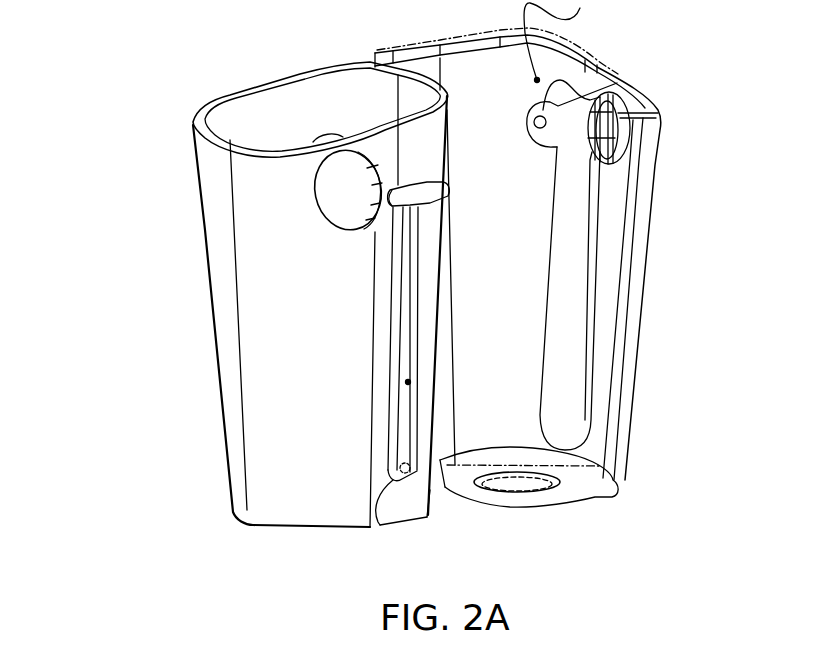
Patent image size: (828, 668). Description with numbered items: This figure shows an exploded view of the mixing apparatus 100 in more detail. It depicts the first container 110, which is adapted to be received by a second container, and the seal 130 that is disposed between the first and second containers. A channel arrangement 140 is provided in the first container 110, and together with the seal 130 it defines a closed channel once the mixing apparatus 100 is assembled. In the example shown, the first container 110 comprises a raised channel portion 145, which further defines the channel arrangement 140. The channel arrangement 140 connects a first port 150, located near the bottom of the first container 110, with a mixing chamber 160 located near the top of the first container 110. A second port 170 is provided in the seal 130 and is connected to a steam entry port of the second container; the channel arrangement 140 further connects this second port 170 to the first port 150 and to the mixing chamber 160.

The mixing apparatus 100 is at (133, 62).
The first container 110 is at (235, 117).
The seal 130 is at (563, 270).
The channel arrangement 140 is at (478, 470).
The raised channel portion 145 is at (397, 347).
The first port 150 is at (380, 525).
The mixing chamber 160 is at (332, 203).
The second port 170 is at (595, 85).